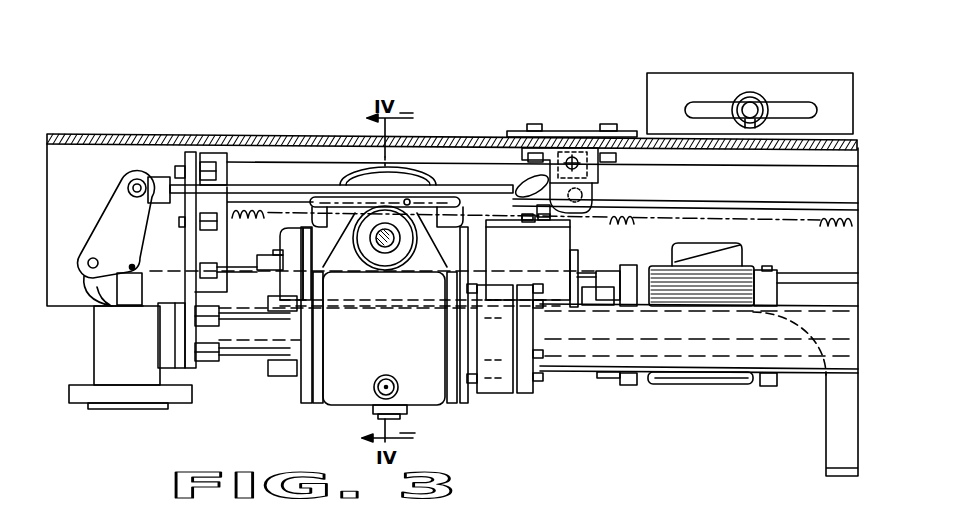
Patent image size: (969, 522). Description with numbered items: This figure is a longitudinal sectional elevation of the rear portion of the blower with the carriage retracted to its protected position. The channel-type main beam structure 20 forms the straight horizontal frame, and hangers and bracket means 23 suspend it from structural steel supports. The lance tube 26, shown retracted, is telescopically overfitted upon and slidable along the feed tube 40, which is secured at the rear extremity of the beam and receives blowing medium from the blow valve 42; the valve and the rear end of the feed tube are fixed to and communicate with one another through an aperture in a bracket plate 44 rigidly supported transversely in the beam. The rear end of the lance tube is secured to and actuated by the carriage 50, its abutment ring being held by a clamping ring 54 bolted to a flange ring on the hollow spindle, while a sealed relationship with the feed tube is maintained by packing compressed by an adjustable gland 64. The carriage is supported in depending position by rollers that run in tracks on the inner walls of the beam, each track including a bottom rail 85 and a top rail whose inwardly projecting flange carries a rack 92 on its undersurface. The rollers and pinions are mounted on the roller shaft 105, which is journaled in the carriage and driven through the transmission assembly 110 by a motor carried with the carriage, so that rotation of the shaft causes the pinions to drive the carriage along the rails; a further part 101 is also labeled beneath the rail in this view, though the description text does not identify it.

The channel-type main beam structure 20 is at (231, 133).
The hangers and bracket means 23 is at (793, 80).
The lance tube 26 is at (587, 358).
The feed tube 40 is at (263, 335).
The blow valve 42 is at (135, 355).
The bracket plate 44 is at (193, 238).
The carriage 50 is at (407, 347).
The clamping ring 54 is at (527, 393).
The adjustable gland 64 is at (300, 374).
The bottom rail 85 is at (798, 272).
The rack 92 is at (828, 236).
The bottom bracket 101 is at (700, 384).
The roller shaft 105 is at (388, 244).
The transmission assembly 110 is at (558, 243).